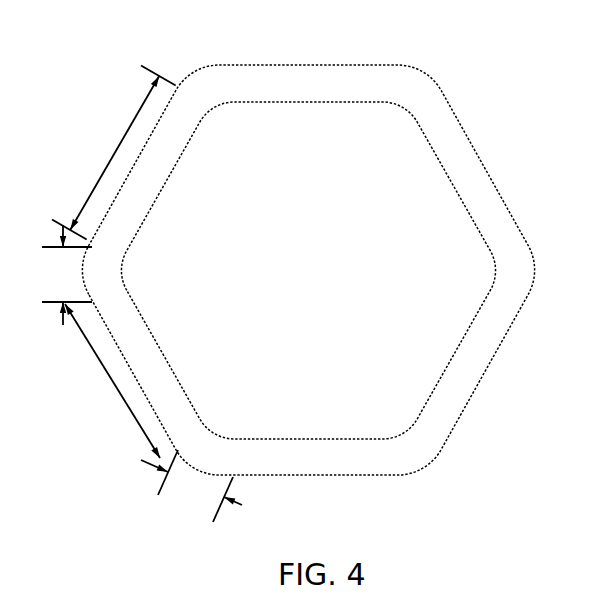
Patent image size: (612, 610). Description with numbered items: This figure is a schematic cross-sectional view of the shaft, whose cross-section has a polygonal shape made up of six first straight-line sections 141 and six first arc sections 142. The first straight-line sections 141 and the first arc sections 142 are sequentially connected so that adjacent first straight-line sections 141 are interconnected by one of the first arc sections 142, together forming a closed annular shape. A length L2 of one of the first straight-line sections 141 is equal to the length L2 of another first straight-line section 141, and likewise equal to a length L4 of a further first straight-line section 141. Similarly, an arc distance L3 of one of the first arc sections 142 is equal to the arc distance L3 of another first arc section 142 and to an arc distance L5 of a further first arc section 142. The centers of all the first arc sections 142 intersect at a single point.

The first straight-line section 141 is at (283, 66).
The first arc section 142 is at (436, 84).
The length of first straight-line section L2 is at (114, 153).
The arc distance of first arc section L3 is at (67, 275).
The length of another first straight-line section L4 is at (112, 381).
The arc distance of another first arc section L5 is at (191, 486).